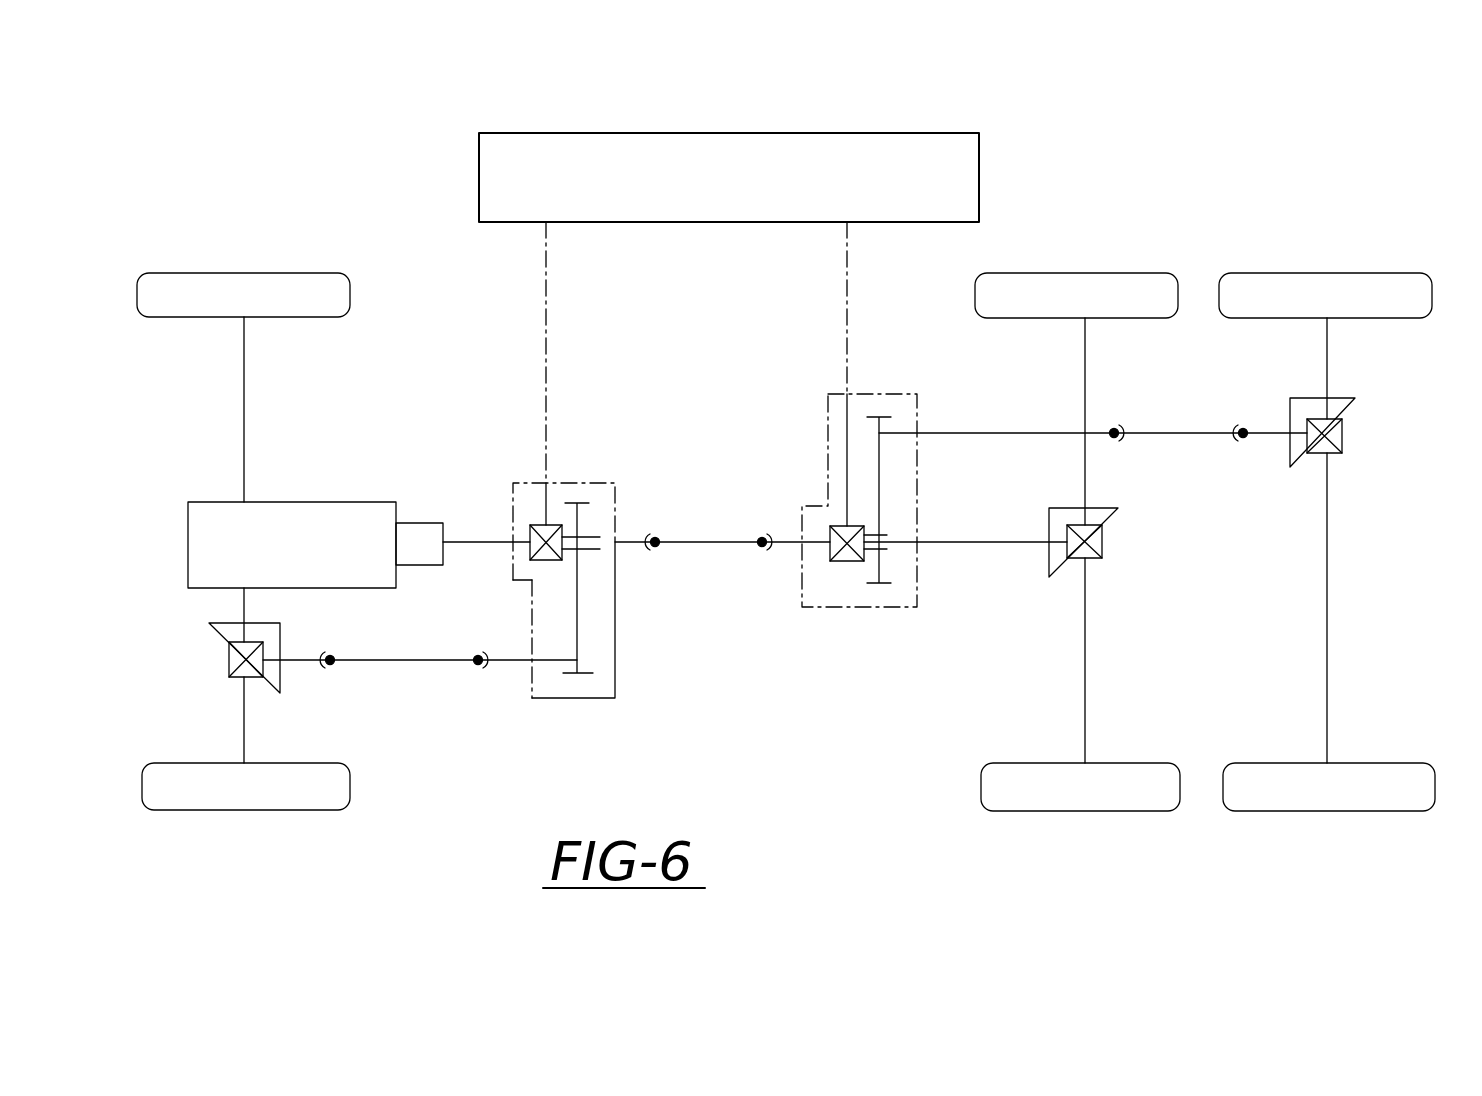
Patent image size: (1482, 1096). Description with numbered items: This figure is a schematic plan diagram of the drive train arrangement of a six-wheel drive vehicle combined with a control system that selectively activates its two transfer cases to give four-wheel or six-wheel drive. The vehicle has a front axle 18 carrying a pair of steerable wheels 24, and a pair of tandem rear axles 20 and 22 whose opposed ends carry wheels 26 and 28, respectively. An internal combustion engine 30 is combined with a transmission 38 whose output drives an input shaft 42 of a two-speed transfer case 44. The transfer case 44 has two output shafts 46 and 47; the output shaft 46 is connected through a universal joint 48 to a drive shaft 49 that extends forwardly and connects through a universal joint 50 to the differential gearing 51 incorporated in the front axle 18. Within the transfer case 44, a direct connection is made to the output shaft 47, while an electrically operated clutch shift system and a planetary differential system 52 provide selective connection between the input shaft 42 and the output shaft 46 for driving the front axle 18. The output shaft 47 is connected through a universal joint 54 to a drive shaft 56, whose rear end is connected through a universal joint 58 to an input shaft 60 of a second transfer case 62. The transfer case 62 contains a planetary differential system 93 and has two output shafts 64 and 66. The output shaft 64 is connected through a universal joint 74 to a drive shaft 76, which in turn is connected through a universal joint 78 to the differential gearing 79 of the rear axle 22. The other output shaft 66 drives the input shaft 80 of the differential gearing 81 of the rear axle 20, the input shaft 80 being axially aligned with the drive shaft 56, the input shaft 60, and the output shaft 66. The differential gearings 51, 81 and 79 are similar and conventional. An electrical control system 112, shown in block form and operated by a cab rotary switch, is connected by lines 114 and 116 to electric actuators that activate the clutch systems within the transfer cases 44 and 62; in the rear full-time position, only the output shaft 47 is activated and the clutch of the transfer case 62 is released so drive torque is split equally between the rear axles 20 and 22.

The front axle 18 is at (242, 722).
The rear axle 20 is at (1089, 711).
The rear axle 22 is at (1329, 661).
The steerable wheels 24 is at (293, 793).
The wheels 26 is at (1090, 292).
The wheels 28 is at (1350, 297).
The internal combustion engine 30 is at (295, 522).
The transmission 38 is at (418, 538).
The input shaft 42 is at (554, 593).
The two-speed transfer case 44 is at (563, 481).
The output shaft 46 is at (548, 660).
The output shaft 47 is at (598, 500).
The universal joint 48 is at (480, 670).
The drive shaft 49 is at (413, 667).
The universal joint 50 is at (323, 670).
The differential gearing 51 is at (226, 660).
The planetary differential system 52 is at (531, 566).
The universal joint 54 is at (650, 535).
The drive shaft 56 is at (703, 545).
The universal joint 58 is at (772, 550).
The input shaft 60 is at (876, 594).
The second transfer case 62 is at (855, 614).
The output shaft 64 is at (1005, 432).
The output shaft 66 is at (917, 580).
The universal joint 74 is at (1120, 441).
The drive shaft 76 is at (1175, 432).
The universal joint 78 is at (1243, 432).
The differential gearing 79 is at (1346, 436).
The input shaft 80 is at (992, 548).
The differential gearing 81 is at (1108, 546).
The planetary differential system 93 is at (859, 526).
The electrical control system 112 is at (990, 168).
The line 114 is at (548, 311).
The line 116 is at (845, 298).